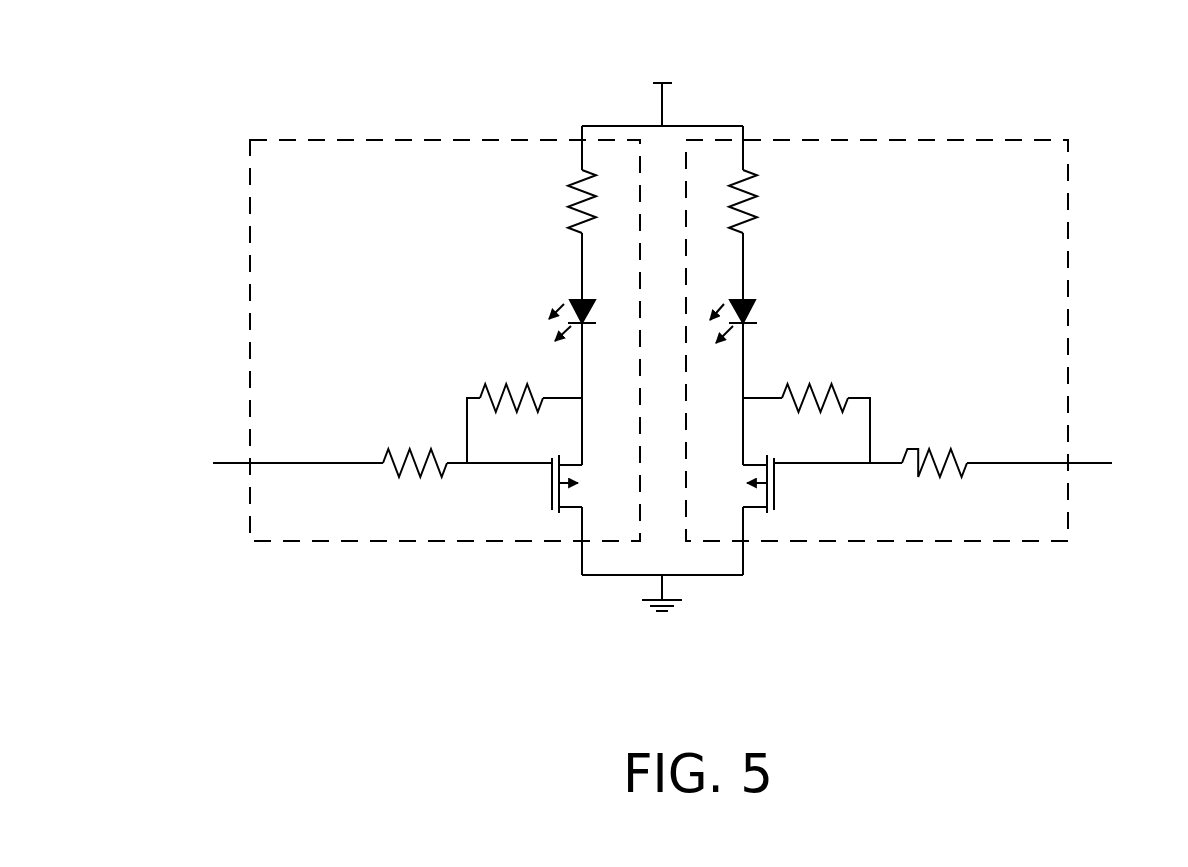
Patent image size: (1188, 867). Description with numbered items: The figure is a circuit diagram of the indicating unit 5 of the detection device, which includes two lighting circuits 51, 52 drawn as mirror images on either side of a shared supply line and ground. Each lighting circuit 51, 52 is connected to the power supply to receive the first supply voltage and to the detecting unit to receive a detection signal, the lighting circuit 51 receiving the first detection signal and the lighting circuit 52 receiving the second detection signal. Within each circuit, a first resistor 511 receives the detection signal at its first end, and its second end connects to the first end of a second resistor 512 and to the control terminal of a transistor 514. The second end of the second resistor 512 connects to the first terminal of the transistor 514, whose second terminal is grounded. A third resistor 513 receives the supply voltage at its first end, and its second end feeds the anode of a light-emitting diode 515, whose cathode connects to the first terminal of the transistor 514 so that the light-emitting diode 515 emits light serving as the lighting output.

The indicating unit 5 is at (1097, 127).
The lighting circuit 51 is at (880, 140).
The lighting circuit 52 is at (442, 140).
The first resistor 511 is at (388, 468).
The second resistor 512 is at (480, 392).
The third resistor 513 is at (570, 198).
The transistor 514 is at (597, 489).
The light-emitting diode 515 is at (578, 300).